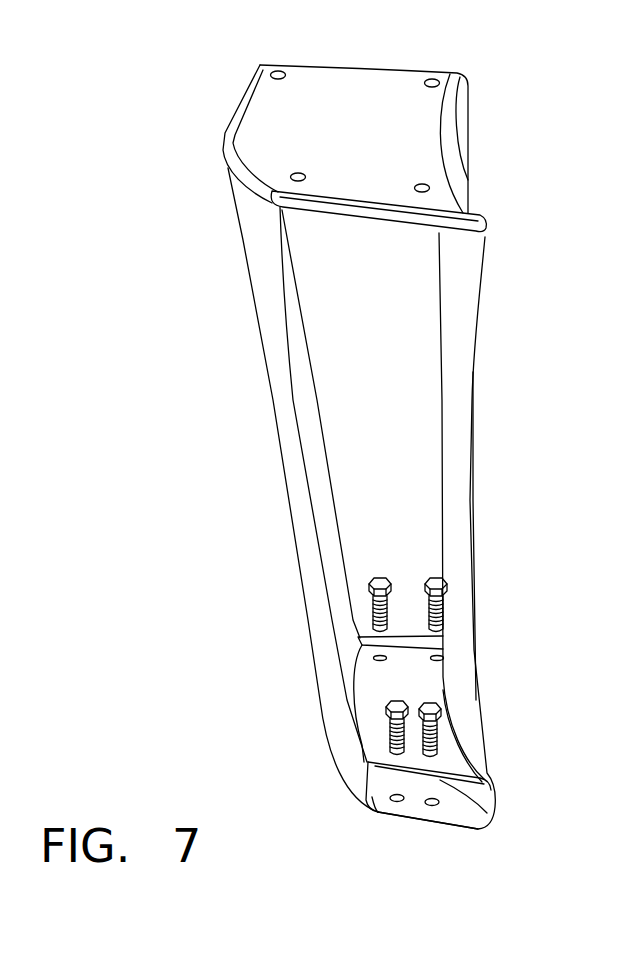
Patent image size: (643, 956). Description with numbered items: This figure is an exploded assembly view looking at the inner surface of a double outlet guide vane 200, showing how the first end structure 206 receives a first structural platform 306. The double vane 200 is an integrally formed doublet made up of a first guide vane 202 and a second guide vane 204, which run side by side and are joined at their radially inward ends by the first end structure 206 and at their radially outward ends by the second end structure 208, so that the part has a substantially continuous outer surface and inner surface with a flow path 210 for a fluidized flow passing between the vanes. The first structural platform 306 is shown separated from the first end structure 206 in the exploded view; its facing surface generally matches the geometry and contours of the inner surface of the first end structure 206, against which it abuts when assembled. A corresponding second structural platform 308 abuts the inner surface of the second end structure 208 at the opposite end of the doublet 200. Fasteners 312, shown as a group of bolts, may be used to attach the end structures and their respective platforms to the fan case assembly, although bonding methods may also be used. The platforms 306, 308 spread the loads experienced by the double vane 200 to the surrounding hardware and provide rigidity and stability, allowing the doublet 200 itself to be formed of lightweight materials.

The double outlet guide vane 200 is at (216, 220).
The first guide vane 202 is at (280, 449).
The second guide vane 204 is at (475, 464).
The first end structure 206 is at (427, 822).
The second end structure 208 is at (383, 102).
The flow path 210 is at (376, 326).
The first structural platform 306 is at (492, 787).
The second structural platform 308 is at (378, 232).
The fasteners 312 is at (379, 583).